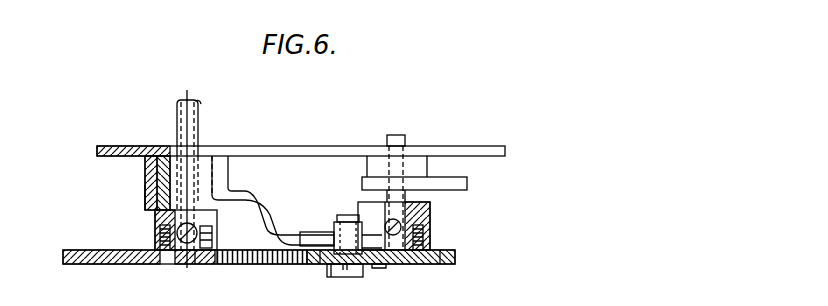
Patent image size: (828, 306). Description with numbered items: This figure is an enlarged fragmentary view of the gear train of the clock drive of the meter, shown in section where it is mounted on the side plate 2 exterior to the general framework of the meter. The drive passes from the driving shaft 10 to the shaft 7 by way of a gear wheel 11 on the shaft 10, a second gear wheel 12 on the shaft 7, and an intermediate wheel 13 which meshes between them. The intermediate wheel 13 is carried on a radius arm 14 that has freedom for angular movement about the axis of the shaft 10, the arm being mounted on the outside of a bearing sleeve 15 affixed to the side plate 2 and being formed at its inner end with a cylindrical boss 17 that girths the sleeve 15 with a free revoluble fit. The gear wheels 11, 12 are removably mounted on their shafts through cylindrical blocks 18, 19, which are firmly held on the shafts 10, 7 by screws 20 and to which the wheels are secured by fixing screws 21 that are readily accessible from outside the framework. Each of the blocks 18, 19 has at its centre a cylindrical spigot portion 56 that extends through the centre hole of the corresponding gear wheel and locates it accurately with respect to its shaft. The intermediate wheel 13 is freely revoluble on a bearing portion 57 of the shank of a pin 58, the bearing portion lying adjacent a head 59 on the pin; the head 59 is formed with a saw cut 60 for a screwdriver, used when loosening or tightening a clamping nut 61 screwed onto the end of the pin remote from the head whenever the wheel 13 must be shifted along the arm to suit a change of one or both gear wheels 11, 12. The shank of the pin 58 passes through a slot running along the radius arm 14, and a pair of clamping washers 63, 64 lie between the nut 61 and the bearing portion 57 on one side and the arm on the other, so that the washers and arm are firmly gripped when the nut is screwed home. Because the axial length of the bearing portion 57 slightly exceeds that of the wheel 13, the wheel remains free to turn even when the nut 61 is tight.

The side plate 2 is at (128, 147).
The shaft 7 is at (405, 140).
The shaft 10 is at (177, 131).
The gear wheel 11 is at (83, 250).
The second gear wheel 12 is at (436, 264).
The intermediate wheel 13 is at (267, 272).
The radius arm 14 is at (257, 211).
The bearing sleeve 15 is at (150, 188).
The cylindrical boss 17 is at (150, 168).
The cylindrical block 18 is at (155, 218).
The cylindrical block 19 is at (430, 208).
The screw 20 is at (197, 230).
The fixing screw 21 is at (159, 237).
The cylindrical spigot portion 56 is at (198, 255).
The bearing portion 57 is at (320, 262).
The pin 58 is at (347, 215).
The head 59 is at (330, 272).
The saw cut 60 is at (345, 277).
The clamping nut 61 is at (335, 223).
The clamping washer 63 is at (330, 231).
The clamping washer 64 is at (378, 265).